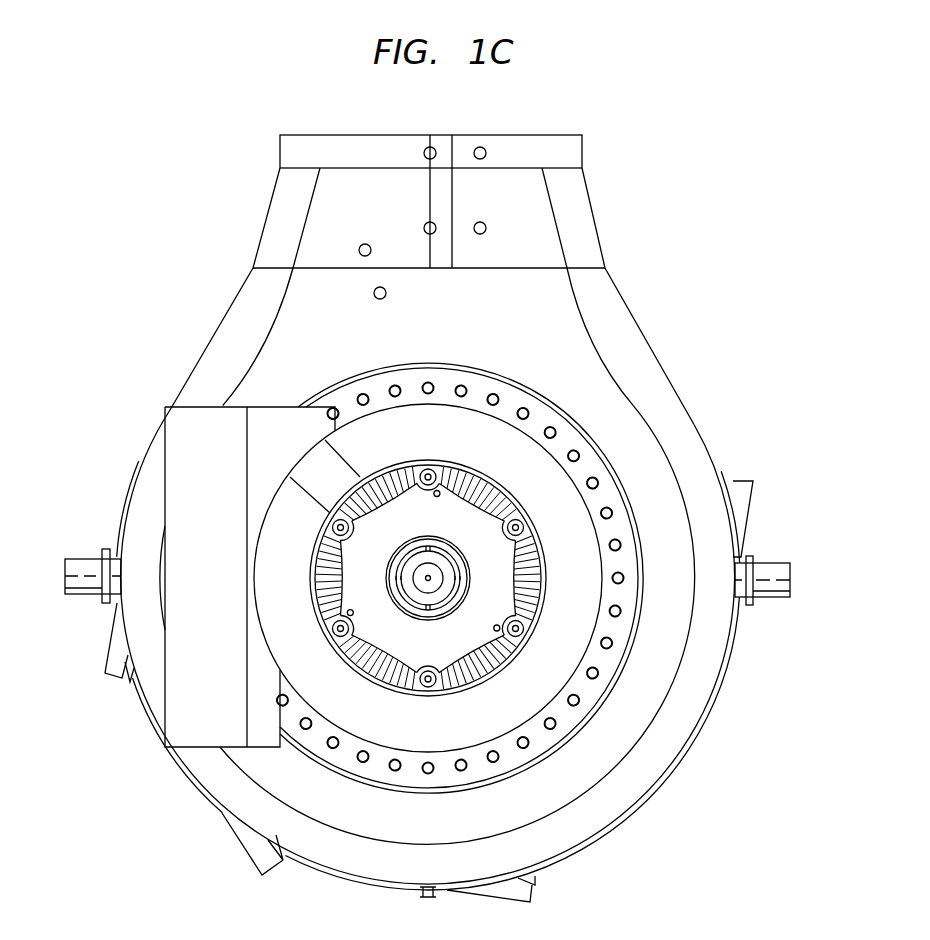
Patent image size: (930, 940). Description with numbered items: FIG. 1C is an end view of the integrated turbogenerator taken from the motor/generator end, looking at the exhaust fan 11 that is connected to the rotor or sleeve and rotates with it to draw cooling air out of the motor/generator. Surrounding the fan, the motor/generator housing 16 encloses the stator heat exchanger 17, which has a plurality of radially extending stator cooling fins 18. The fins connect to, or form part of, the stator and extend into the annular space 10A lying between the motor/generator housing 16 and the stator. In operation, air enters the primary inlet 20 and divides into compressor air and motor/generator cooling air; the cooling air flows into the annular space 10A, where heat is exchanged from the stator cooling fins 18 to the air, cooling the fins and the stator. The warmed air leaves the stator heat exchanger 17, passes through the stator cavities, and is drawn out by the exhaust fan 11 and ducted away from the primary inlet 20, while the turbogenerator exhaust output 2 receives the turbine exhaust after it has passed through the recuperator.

The turbogenerator exhaust output 2 is at (553, 132).
The annular space 10A is at (543, 582).
The exhaust fan 11 is at (407, 598).
The motor/generator housing 16 is at (502, 673).
The stator heat exchanger 17 is at (547, 545).
The stator cooling fins 18 is at (490, 483).
The primary inlet 20 is at (428, 441).